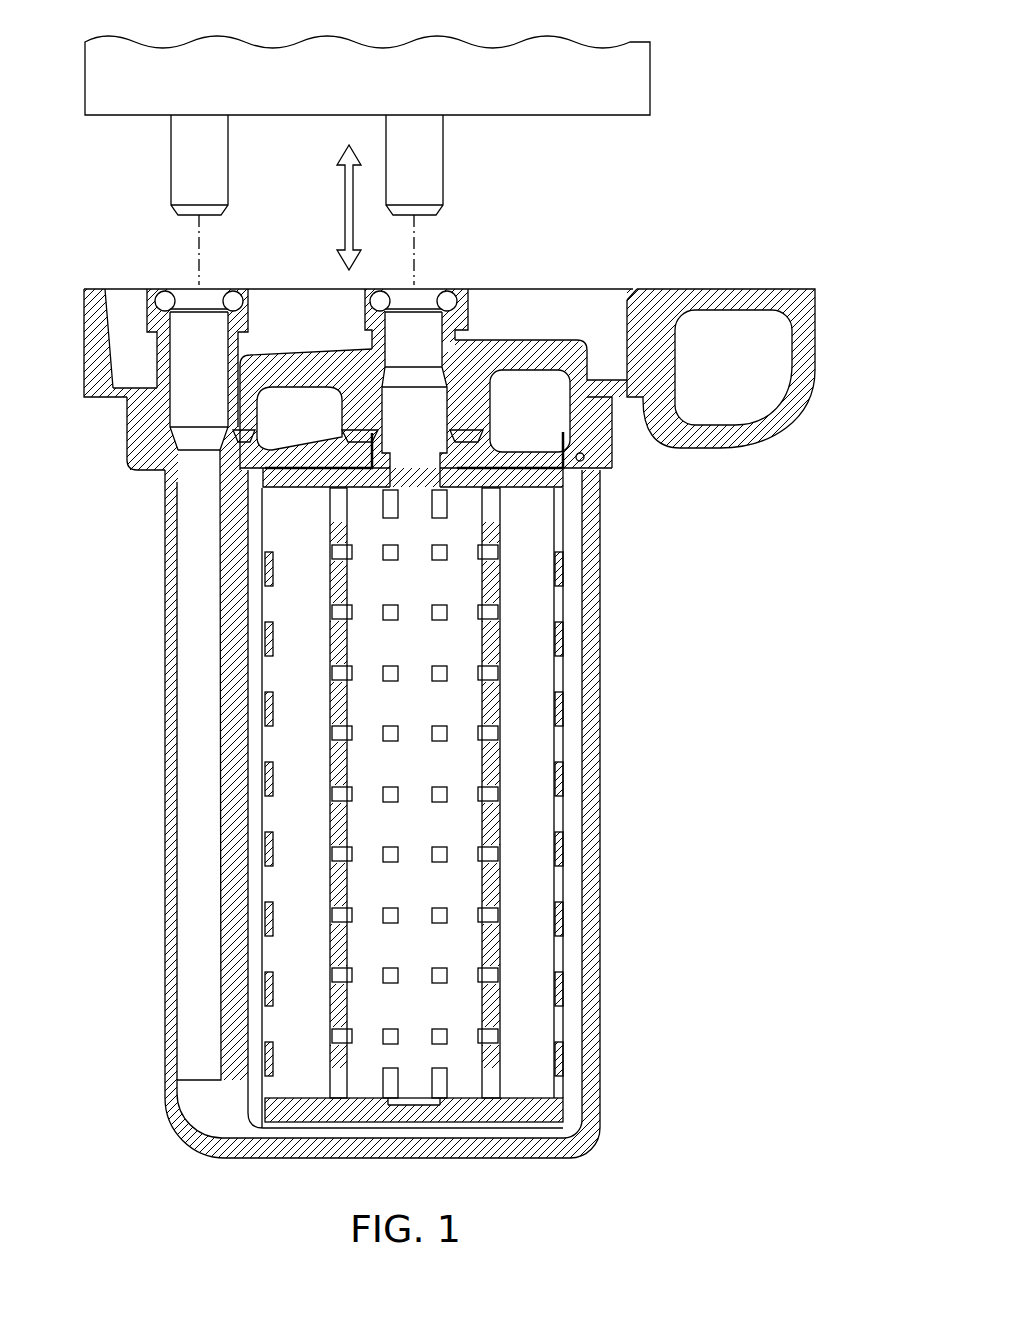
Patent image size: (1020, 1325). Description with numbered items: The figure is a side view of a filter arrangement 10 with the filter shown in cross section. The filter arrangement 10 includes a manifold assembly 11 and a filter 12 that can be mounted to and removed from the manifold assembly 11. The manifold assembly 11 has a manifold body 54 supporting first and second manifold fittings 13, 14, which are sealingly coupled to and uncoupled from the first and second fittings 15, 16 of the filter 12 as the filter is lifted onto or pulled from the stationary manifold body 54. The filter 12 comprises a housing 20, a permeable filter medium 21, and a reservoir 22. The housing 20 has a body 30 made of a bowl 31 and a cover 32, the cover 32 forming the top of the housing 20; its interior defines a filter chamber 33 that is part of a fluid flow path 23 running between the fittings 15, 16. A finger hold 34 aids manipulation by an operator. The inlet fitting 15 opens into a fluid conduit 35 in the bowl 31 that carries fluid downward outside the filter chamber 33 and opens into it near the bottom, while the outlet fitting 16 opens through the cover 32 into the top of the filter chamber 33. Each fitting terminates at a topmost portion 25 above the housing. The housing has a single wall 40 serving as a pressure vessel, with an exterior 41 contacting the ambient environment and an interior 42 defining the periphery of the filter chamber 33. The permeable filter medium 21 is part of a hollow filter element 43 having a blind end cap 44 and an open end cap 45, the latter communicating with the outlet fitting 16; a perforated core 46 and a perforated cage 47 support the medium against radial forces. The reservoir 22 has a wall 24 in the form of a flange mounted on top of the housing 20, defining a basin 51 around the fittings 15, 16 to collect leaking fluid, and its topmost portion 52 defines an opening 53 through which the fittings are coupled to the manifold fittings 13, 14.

The filter arrangement 10 is at (752, 122).
The manifold assembly 11 is at (650, 78).
The filter 12 is at (165, 532).
The first manifold fitting 13 is at (180, 157).
The second manifold fitting 14 is at (428, 157).
The first fitting 15 is at (208, 327).
The second fitting 16 is at (422, 337).
The housing 20 is at (603, 673).
The permeable filter medium 21 is at (527, 615).
The reservoir 22 is at (92, 327).
The fluid flow path 23 is at (414, 455).
The wall 24 is at (83, 382).
The topmost portion 25 is at (237, 295).
The body 30 is at (598, 790).
The bowl 31 is at (595, 717).
The cover 32 is at (541, 335).
The filter chamber 33 is at (256, 712).
The finger hold 34 is at (770, 450).
The fluid conduit 35 is at (200, 768).
The single wall 40 is at (598, 838).
The exterior 41 is at (598, 937).
The interior 42 is at (576, 995).
The hollow filter element 43 is at (455, 880).
The blind end cap 44 is at (523, 1100).
The open end cap 45 is at (530, 483).
The perforated core 46 is at (330, 832).
The perforated cage 47 is at (270, 946).
The basin 51 is at (120, 322).
The topmost portion 52 is at (598, 289).
The opening 53 is at (636, 300).
The manifold body 54 is at (105, 72).